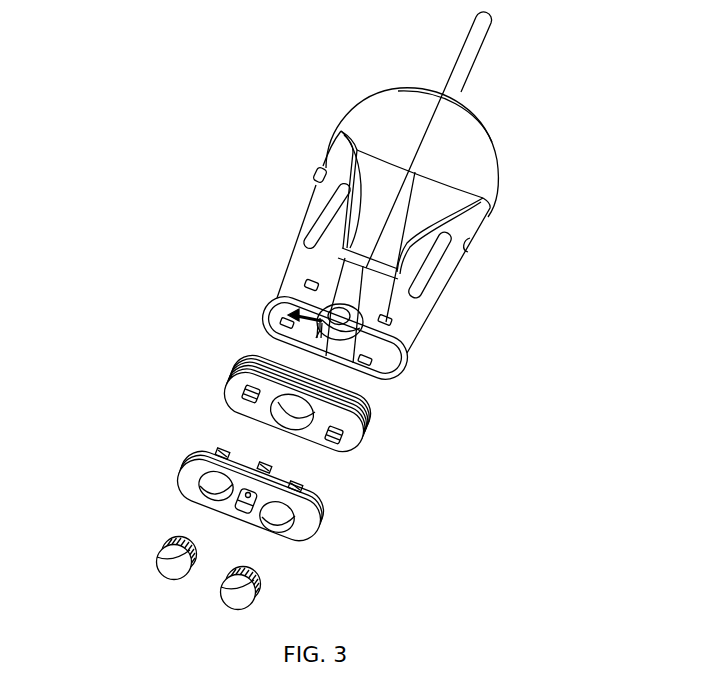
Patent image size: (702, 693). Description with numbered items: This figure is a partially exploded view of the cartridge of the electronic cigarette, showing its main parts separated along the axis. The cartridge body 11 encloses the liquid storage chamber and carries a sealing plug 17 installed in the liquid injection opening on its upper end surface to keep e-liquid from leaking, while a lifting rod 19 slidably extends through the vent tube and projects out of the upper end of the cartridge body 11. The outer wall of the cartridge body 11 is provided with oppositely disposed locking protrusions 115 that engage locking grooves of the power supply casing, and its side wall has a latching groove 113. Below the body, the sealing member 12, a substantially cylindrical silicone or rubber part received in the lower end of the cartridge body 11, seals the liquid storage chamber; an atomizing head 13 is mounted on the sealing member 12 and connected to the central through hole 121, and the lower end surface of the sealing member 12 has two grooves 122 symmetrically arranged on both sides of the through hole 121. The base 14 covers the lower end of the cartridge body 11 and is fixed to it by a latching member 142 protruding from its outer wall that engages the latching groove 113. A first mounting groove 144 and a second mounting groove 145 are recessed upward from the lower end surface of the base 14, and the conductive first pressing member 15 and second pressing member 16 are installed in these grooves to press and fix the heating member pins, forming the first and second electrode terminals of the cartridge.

The cartridge body 11 is at (306, 227).
The sealing member 12 is at (240, 375).
The atomizing head 13 is at (264, 318).
The base 14 is at (180, 478).
The first pressing member 15 is at (164, 544).
The second pressing member 16 is at (258, 588).
The sealing plug 17 is at (423, 87).
The lifting rod 19 is at (475, 68).
The latching groove 113 is at (309, 281).
The locking protrusions 115 is at (320, 168).
The through hole 121 is at (294, 418).
The grooves 122 is at (238, 366).
The latching member 142 is at (307, 490).
The first mounting groove 144 is at (209, 489).
The second mounting groove 145 is at (283, 524).